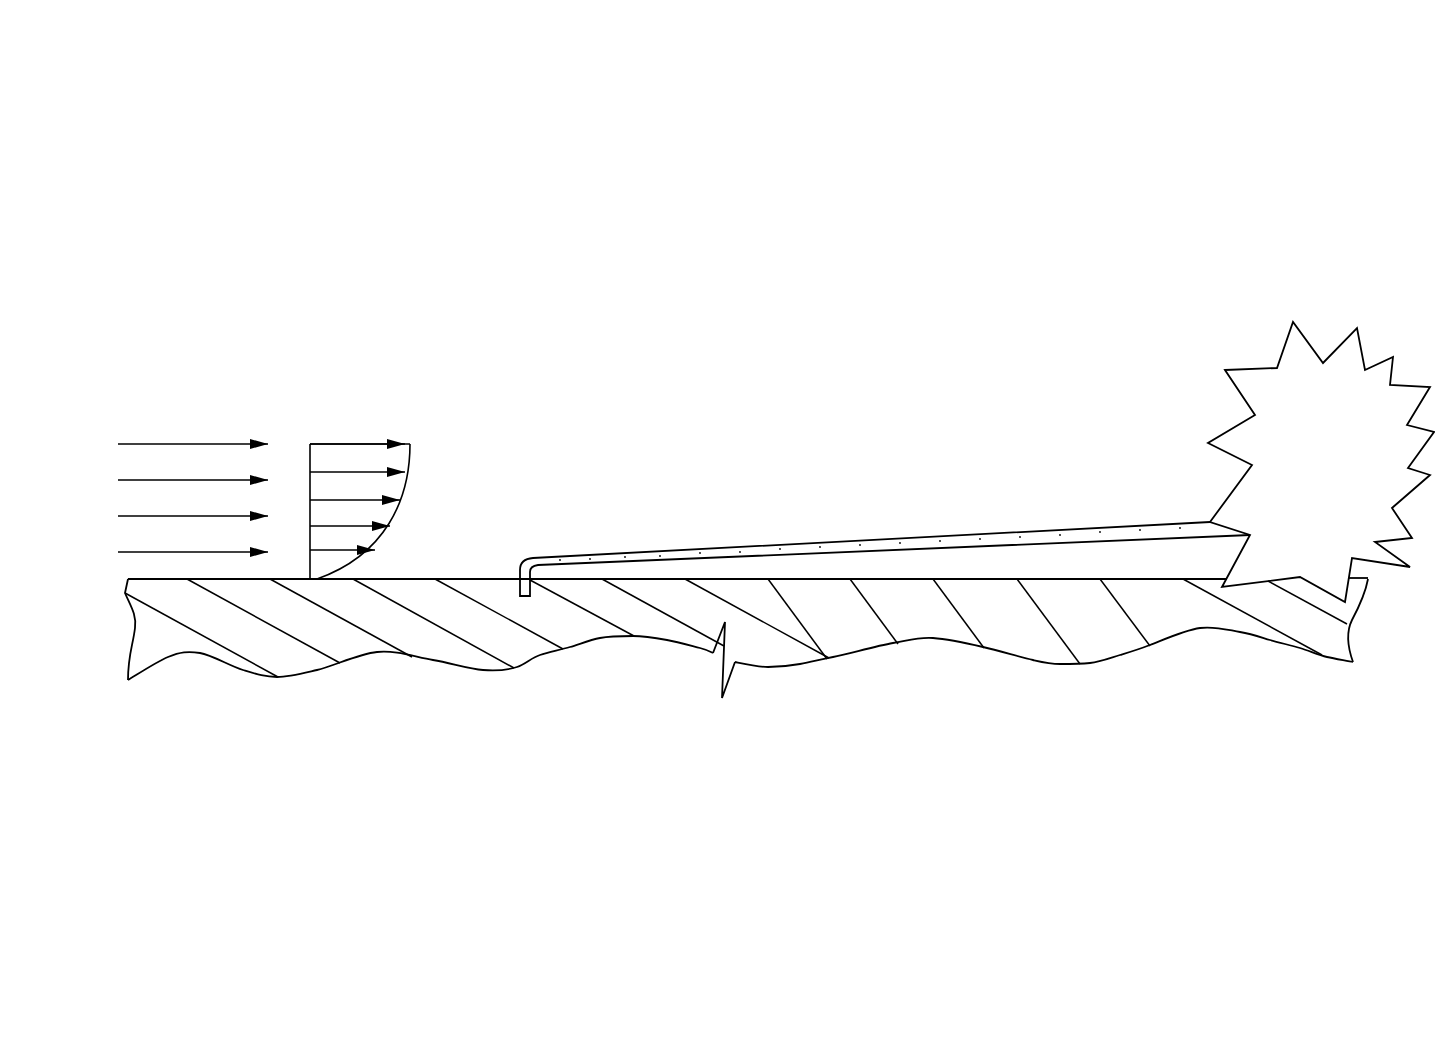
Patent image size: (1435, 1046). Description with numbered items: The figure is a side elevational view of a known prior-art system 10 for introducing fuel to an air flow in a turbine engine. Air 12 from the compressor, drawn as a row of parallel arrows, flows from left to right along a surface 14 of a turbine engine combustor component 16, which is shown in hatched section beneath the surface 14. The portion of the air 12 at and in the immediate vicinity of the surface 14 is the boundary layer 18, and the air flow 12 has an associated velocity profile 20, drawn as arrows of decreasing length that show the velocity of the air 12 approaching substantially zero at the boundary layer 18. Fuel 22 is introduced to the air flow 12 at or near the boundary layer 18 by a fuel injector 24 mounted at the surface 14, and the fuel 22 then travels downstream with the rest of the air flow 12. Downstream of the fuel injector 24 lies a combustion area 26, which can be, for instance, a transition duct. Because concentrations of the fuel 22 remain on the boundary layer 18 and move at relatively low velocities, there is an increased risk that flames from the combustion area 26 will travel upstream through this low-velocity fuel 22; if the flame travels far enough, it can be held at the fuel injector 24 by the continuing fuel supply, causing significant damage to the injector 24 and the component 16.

The system 10 is at (263, 230).
The air 12 is at (188, 443).
The surface 14 is at (428, 578).
The turbine engine combustor component 16 is at (282, 648).
The boundary layer 18 is at (283, 563).
The velocity profile 20 is at (407, 425).
The fuel 22 is at (715, 550).
The fuel injector 24 is at (528, 597).
The combustion area 26 is at (1300, 365).